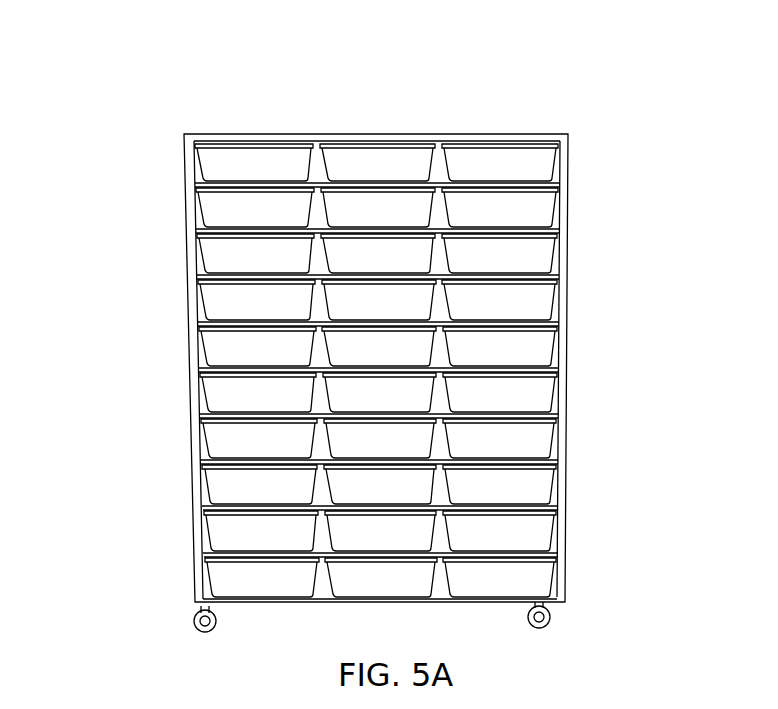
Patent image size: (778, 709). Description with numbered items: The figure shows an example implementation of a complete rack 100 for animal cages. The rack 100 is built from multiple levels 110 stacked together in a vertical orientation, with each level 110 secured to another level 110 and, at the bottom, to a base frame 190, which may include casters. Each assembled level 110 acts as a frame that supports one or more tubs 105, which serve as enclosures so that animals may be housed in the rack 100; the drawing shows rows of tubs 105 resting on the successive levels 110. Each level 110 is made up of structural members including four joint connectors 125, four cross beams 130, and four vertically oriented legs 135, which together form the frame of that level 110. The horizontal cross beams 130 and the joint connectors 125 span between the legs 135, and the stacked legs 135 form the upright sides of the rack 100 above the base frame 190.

The rack 100 is at (498, 104).
The tub 105 is at (295, 203).
The level 110 is at (563, 580).
The joint connector 125 is at (190, 192).
The cross beam 130 is at (265, 235).
The leg 135 is at (190, 170).
The base frame 190 is at (392, 604).